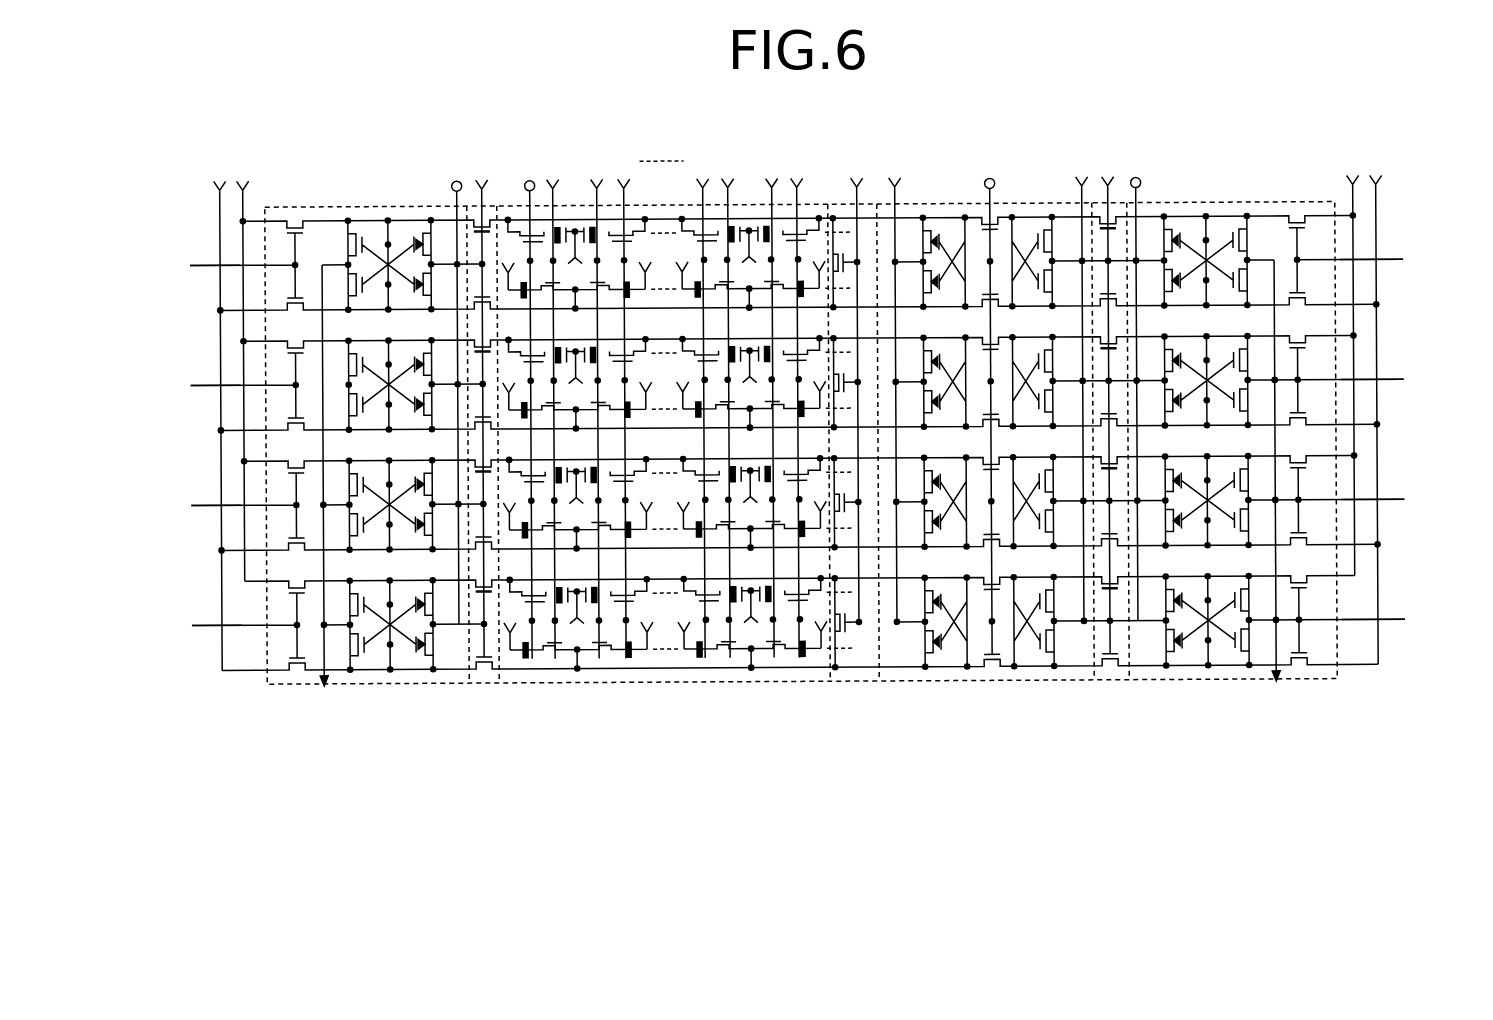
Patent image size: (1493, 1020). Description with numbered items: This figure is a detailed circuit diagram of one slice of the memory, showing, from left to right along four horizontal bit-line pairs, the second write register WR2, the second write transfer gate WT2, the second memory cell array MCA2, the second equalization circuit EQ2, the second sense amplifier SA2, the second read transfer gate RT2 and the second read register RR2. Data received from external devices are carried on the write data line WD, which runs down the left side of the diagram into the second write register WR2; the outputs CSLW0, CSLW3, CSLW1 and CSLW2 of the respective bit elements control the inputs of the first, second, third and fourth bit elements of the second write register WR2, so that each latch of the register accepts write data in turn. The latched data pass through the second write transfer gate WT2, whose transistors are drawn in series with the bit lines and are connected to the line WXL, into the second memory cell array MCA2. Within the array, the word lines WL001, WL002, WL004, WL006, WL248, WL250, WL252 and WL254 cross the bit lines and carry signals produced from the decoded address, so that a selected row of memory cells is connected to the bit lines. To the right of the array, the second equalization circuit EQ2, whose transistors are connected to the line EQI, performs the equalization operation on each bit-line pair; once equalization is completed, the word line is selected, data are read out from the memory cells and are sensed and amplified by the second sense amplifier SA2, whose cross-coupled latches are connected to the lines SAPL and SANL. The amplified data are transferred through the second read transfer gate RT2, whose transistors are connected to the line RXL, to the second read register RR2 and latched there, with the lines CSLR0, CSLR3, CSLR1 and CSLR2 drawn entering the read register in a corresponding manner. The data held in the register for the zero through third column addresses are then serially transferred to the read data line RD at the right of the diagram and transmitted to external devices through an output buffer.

The write data line WD is at (220, 407).
The write transfer control line WXL is at (482, 395).
The word line WL001 is at (530, 384).
The word line WL002 is at (553, 384).
The word line WL004 is at (597, 384).
The word line WL006 is at (624, 384).
The word line WL248 is at (703, 383).
The word line WL250 is at (728, 383).
The word line WL252 is at (772, 383).
The word line WL254 is at (797, 383).
The equalize control line EQI is at (857, 381).
The sense amplifier P-channel drive line SAPL is at (895, 374).
The sense amplifier N-channel drive line SANL is at (1082, 372).
The read transfer control line RXL is at (1108, 395).
The read data line RD is at (1376, 403).
The output of bit element wp0 CSLW0 is at (176, 266).
The output of bit element wp3 CSLW3 is at (177, 386).
The output of bit element wp1 CSLW1 is at (177, 506).
The output of bit element wp2 CSLW2 is at (178, 626).
The read column select line CSLR0 is at (1408, 260).
The read column select line CSLR3 is at (1409, 380).
The read column select line CSLR1 is at (1409, 500).
The read column select line CSLR2 is at (1410, 620).
The second write register WR2 is at (367, 684).
The second write transfer gate WT2 is at (478, 684).
The second memory cell array MCA2 is at (617, 684).
The second equalization circuit EQ2 is at (847, 684).
The second sense amplifier SA2 is at (953, 684).
The second read transfer gate RT2 is at (1118, 684).
The second read register RR2 is at (1209, 684).